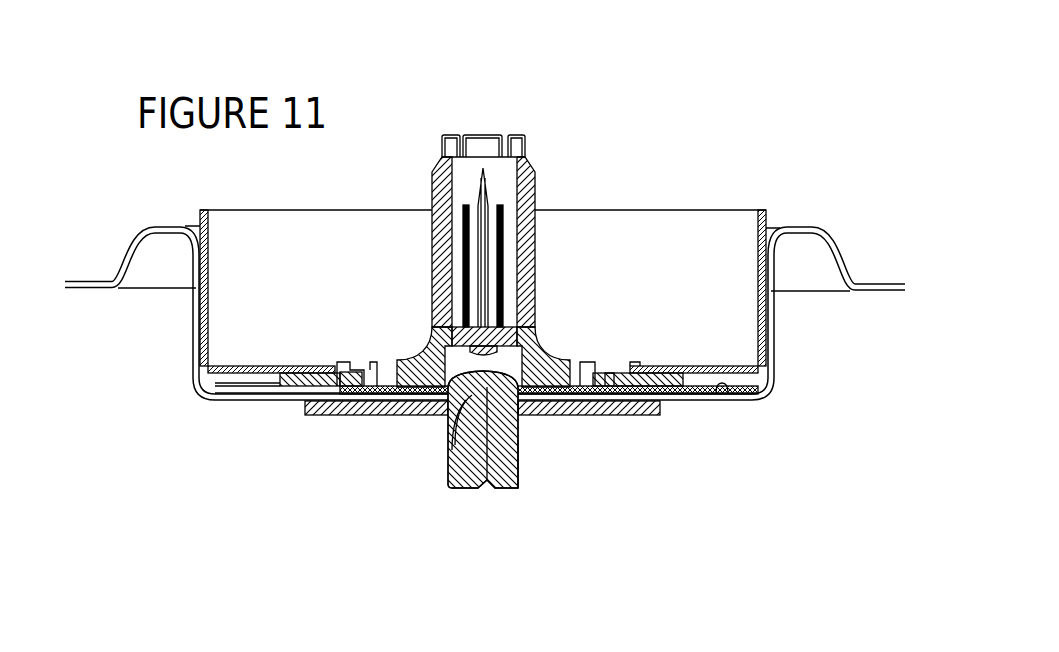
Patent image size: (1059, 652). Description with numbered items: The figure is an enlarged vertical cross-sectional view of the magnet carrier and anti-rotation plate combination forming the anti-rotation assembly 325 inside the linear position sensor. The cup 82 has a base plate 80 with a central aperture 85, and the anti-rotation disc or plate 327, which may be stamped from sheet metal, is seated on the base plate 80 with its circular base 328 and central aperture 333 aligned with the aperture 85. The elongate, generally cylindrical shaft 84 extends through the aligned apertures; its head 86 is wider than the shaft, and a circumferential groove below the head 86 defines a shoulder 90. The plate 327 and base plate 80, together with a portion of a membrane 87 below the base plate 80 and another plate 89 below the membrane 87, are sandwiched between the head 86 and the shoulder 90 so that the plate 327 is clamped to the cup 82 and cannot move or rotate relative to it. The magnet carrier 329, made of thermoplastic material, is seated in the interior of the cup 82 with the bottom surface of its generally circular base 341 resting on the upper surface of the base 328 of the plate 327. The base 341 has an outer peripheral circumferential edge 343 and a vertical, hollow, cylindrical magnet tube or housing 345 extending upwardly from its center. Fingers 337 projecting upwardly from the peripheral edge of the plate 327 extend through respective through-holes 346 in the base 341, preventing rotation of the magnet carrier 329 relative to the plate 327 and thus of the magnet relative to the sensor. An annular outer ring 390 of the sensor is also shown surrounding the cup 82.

The cup 82 is at (713, 203).
The anti-rotation assembly 325 is at (587, 267).
The annular outer ring 390 is at (240, 365).
The outer peripheral circumferential edge 343 is at (207, 403).
The fingers 337 is at (378, 366).
The through-holes 346 is at (357, 365).
The plate 89 is at (323, 415).
The base 341 is at (348, 416).
The membrane 87 is at (252, 403).
The circular base 328 is at (390, 417).
The magnet carrier 329 is at (425, 167).
The anti-rotation disc or plate 327 is at (392, 365).
The magnet tube or housing 345 is at (535, 185).
The central aperture 333 is at (448, 478).
The head 86 is at (487, 492).
The central aperture 85 is at (447, 440).
The shaft 84 is at (522, 458).
The shoulder 90 is at (530, 420).
The base plate 80 is at (722, 385).